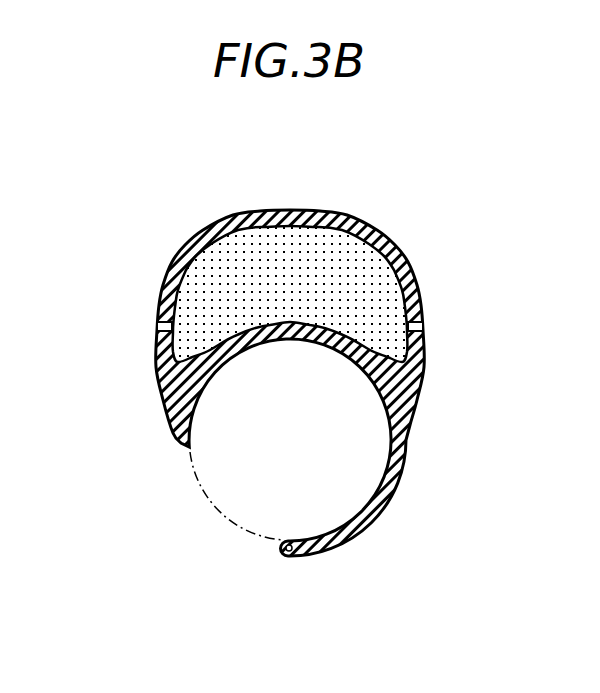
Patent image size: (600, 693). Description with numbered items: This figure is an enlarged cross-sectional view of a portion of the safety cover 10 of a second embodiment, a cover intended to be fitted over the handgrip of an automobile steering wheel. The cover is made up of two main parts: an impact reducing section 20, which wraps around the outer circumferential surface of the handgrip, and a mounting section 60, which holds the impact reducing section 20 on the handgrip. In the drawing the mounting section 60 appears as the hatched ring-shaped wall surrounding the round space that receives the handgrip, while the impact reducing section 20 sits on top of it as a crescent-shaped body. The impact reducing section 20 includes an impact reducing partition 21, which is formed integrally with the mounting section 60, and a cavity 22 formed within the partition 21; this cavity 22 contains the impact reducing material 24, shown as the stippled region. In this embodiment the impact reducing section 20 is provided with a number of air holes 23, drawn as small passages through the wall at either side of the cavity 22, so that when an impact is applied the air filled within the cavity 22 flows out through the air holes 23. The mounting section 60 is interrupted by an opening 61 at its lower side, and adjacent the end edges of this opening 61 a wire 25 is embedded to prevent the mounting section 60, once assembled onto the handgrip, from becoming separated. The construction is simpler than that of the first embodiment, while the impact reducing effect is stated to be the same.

The safety cover 10 is at (251, 209).
The impact reducing section 20 is at (355, 217).
The impact reducing partition 21 is at (178, 272).
The cavity 22 is at (391, 301).
The air holes 23 is at (157, 326).
The impact reducing material 24 is at (350, 288).
The wire 25 is at (178, 445).
The mounting section 60 is at (390, 502).
The opening 61 is at (288, 553).